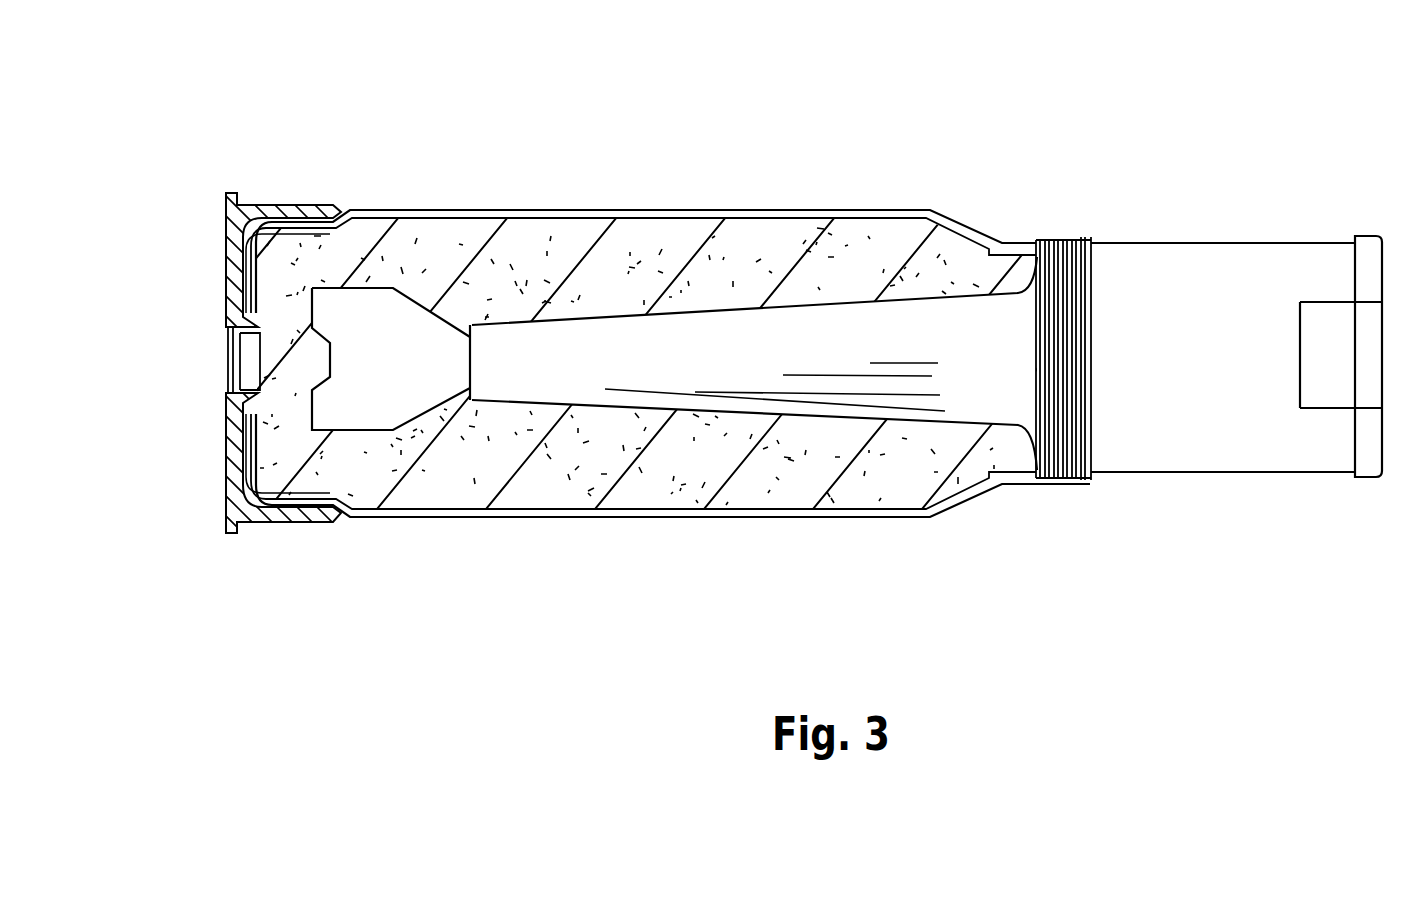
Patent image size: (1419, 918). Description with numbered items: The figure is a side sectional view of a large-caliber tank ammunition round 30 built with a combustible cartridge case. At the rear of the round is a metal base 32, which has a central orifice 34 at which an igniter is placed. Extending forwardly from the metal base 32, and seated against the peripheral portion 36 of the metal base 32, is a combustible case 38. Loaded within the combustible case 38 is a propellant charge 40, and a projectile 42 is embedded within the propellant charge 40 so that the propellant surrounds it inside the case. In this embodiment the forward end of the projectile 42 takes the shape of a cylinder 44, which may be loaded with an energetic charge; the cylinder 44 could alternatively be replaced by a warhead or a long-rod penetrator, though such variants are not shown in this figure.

The large-caliber ammunition 30 is at (1050, 184).
The metal base 32 is at (223, 457).
The central orifice 34 is at (250, 358).
The peripheral portion 36 is at (340, 210).
The combustible case 38 is at (393, 510).
The propellant charge 40 is at (557, 477).
The projectile 42 is at (915, 340).
The cylinder 44 is at (1232, 447).